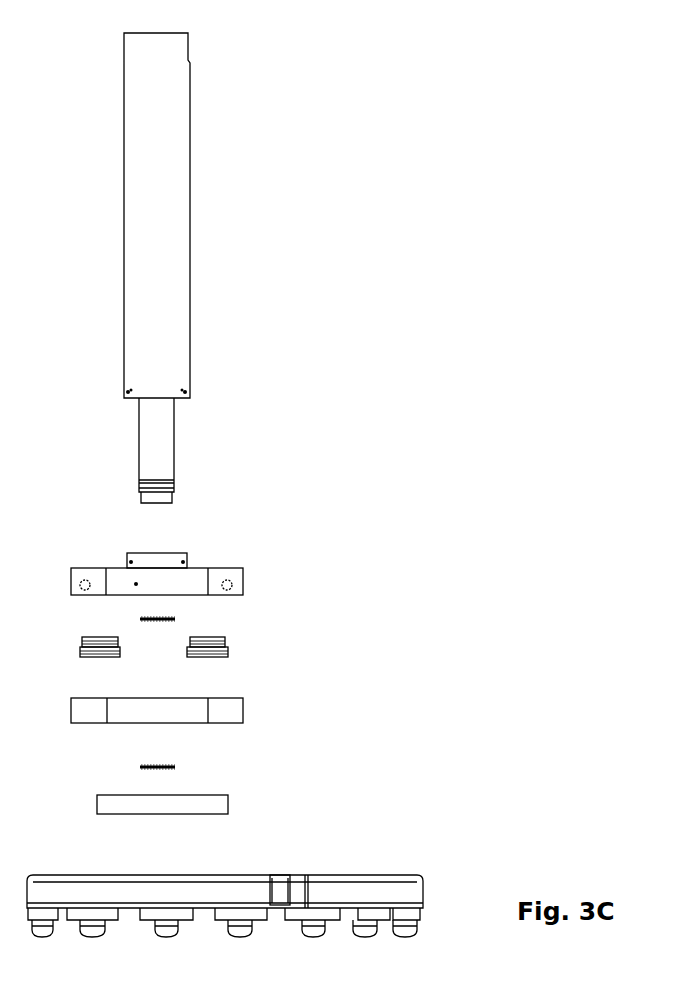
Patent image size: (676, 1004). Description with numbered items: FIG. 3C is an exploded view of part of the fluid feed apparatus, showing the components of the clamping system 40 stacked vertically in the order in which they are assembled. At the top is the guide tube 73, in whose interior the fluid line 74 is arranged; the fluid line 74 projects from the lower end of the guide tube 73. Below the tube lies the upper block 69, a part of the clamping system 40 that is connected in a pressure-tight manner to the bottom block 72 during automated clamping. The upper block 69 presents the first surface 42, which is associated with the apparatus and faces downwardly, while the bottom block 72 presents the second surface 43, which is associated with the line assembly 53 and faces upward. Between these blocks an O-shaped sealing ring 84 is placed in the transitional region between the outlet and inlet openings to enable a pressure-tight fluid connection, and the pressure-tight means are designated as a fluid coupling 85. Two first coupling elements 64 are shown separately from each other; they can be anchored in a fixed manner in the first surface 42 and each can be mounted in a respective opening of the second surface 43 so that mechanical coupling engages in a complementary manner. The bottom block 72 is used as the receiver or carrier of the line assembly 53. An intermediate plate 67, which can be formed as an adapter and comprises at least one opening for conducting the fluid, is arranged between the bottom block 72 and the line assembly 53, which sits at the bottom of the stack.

The guide tube 73 is at (187, 212).
The fluid line 74 is at (174, 457).
The upper block 69 is at (237, 579).
The first surface 42 is at (106, 602).
The O-shaped sealing ring 84 is at (175, 619).
The first coupling element 64 is at (118, 650).
The second surface 43 is at (107, 692).
The bottom block 72 is at (240, 707).
The fluid coupling 85 is at (175, 767).
The intermediate plate 67 is at (222, 800).
The line assembly 53 is at (405, 883).
The clamping system 40 is at (355, 540).